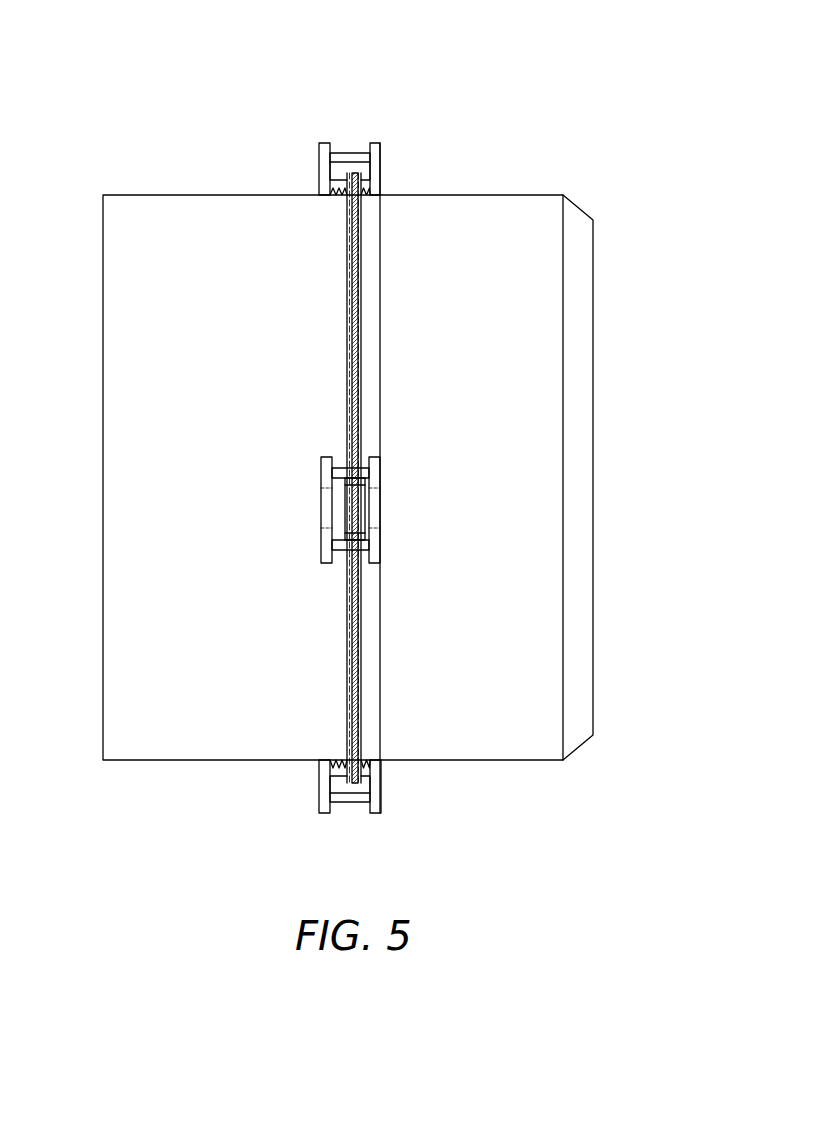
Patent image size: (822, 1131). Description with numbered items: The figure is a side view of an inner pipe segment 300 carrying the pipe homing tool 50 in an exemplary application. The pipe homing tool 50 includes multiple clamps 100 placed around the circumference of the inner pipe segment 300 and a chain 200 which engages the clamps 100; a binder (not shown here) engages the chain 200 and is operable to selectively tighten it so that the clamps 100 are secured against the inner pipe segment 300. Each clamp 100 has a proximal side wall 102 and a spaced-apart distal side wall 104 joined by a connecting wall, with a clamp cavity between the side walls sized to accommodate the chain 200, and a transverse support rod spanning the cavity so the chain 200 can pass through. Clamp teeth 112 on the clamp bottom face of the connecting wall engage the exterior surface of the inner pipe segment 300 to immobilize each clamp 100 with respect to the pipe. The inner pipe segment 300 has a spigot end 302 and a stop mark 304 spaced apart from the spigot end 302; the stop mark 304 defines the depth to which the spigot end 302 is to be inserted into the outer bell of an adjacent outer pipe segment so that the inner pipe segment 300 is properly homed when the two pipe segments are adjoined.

The pipe homing tool 50 is at (233, 68).
The clamp 100 is at (317, 175).
The clamp teeth 112 is at (342, 197).
The chain 200 is at (360, 346).
The stop mark 304 is at (379, 402).
The proximal side wall 102 is at (373, 475).
The distal side wall 104 is at (325, 468).
The inner pipe segment 300 is at (185, 583).
The spigot end 302 is at (577, 641).